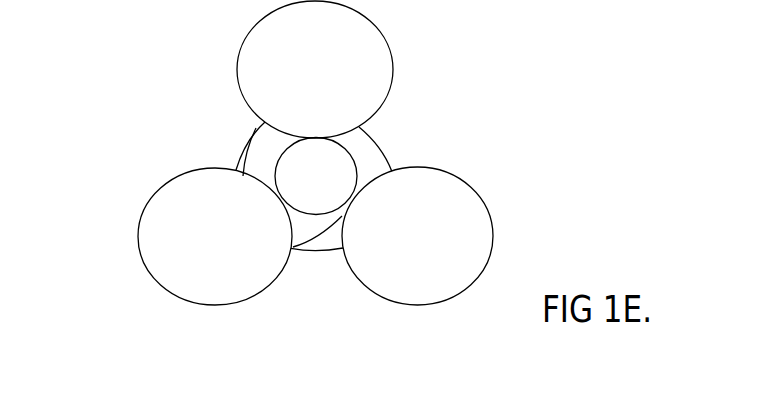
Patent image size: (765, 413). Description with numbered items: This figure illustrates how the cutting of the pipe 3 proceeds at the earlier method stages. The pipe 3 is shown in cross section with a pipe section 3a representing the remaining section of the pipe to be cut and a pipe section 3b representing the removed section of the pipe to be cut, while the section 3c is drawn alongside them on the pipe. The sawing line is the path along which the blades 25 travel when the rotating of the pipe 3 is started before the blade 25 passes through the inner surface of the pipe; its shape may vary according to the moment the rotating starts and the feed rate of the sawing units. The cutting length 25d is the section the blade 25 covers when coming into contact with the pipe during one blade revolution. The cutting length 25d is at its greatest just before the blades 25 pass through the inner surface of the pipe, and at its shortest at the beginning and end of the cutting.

The blade 25 is at (377, 28).
The cutting length 25d is at (335, 195).
The pipe 3 is at (305, 264).
The pipe section 3a is at (271, 144).
The pipe section 3b is at (364, 129).
The pore throat 3c is at (256, 170).